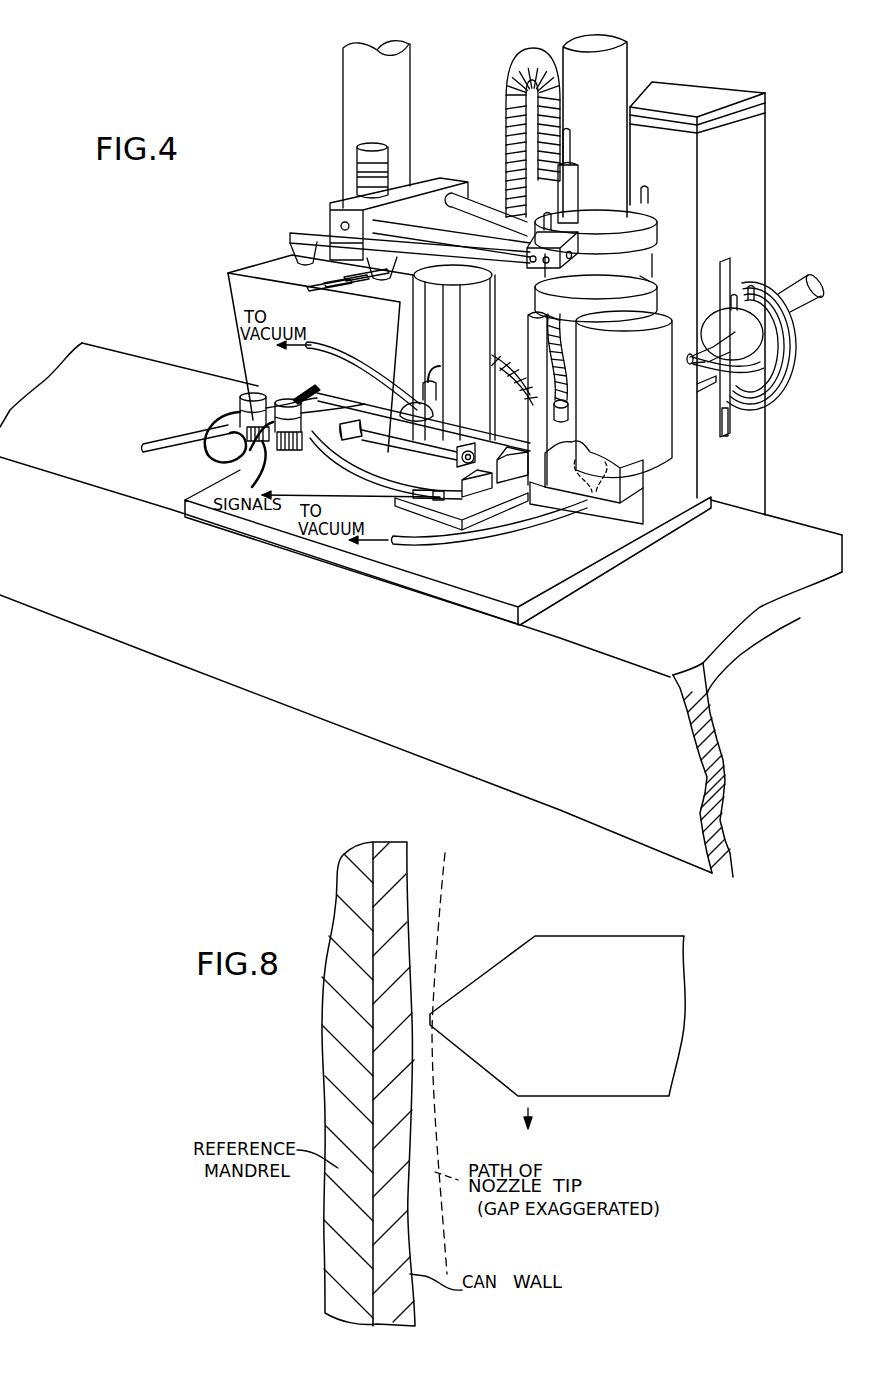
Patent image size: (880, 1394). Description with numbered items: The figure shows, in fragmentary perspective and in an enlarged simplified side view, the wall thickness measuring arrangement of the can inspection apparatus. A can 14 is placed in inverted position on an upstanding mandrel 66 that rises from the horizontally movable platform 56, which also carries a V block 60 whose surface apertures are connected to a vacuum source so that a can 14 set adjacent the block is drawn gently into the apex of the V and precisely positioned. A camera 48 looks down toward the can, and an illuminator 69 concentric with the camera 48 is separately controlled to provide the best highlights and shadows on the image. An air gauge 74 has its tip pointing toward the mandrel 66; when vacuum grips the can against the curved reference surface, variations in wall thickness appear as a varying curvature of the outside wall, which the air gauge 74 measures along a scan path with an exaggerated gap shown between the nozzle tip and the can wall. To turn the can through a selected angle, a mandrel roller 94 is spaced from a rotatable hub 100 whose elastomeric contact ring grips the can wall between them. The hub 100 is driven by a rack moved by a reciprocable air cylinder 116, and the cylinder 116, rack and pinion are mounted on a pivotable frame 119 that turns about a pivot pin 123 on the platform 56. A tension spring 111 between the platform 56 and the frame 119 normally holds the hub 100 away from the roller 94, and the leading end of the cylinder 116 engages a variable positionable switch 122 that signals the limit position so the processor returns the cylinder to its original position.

In FIG. 4, the can 14 is at (664, 448).
In FIG. 8, the can 14 is at (410, 888).
In FIG. 4, the camera 48 is at (616, 88).
In FIG. 4, the platform 56 is at (514, 588).
In FIG. 4, the V block 60 is at (636, 509).
In FIG. 4, the mandrel 66 is at (495, 302).
In FIG. 8, the mandrel 66 is at (333, 1046).
In FIG. 4, the illuminator 69 is at (648, 252).
In FIG. 4, the air gauge 74 is at (772, 358).
In FIG. 8, the air gauge 74 is at (577, 936).
In FIG. 4, the mandrel roller 94 is at (440, 408).
In FIG. 4, the rotatable hub 100 is at (406, 390).
In FIG. 4, the tension spring 111 is at (308, 396).
In FIG. 4, the pivotable frame 119 is at (352, 404).
In FIG. 4, the air cylinder 116 is at (412, 445).
In FIG. 4, the switch 122 is at (483, 486).
In FIG. 4, the pivot pin 123 is at (510, 445).